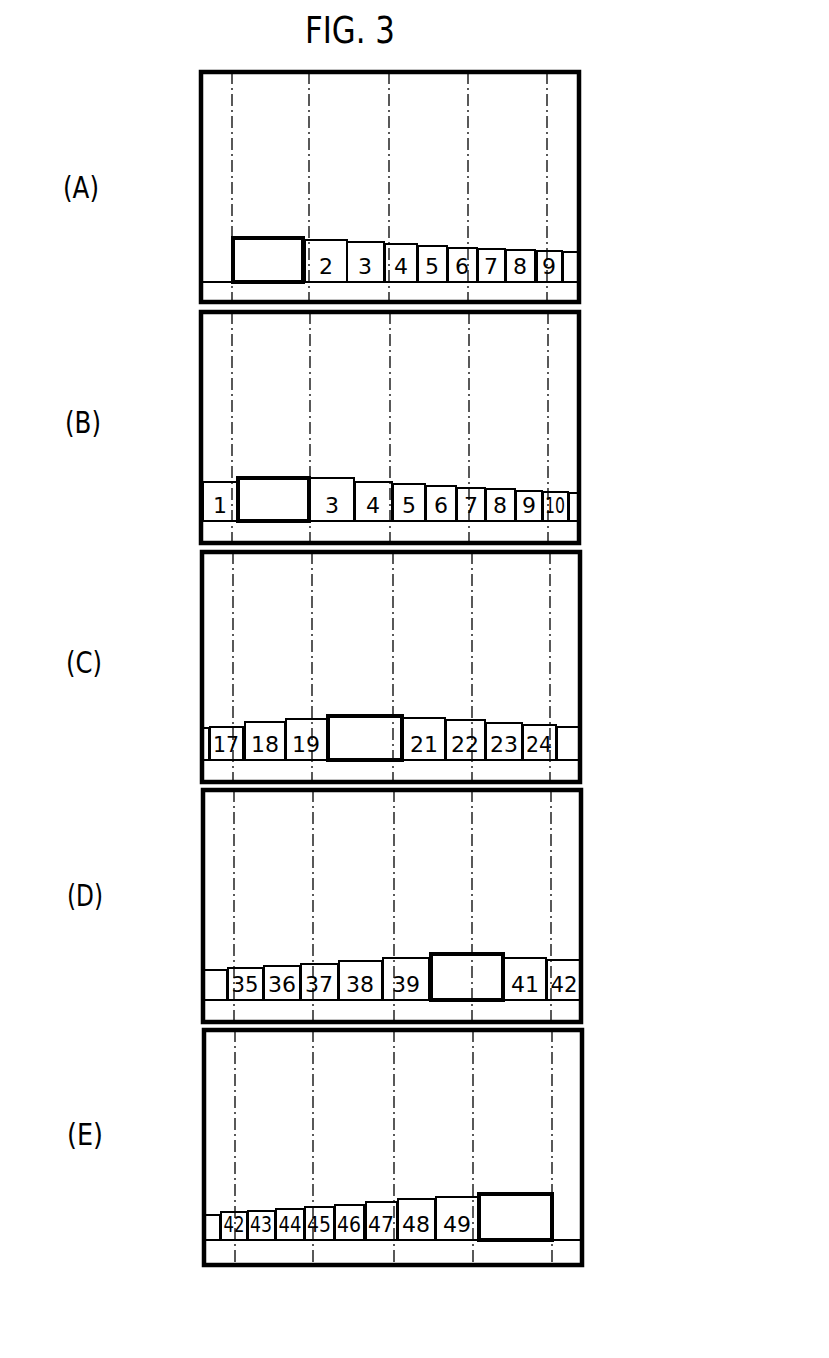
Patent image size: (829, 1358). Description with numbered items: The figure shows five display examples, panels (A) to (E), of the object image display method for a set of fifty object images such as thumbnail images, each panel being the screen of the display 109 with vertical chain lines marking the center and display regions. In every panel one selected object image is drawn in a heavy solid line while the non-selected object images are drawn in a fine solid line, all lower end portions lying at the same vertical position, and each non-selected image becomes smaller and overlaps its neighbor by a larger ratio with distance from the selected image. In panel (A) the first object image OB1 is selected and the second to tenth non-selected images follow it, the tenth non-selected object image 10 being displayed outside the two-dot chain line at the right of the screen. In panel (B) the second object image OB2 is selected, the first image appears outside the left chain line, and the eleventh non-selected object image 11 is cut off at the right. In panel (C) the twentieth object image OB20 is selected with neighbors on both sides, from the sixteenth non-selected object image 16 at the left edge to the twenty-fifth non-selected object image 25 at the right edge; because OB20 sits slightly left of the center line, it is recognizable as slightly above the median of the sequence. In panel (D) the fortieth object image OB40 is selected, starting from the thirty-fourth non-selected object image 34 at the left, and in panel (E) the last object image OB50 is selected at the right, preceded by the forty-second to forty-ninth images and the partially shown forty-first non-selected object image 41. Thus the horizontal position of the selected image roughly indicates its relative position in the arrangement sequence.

The display 109 is at (580, 136).
The first object image OB1 is at (268, 238).
The second object image OB2 is at (268, 478).
The twentieth object image OB20 is at (339, 716).
The fortieth object image OB40 is at (479, 954).
The last object image OB50 is at (518, 1164).
The tenth non-selected object image 10 is at (571, 251).
The eleventh non-selected object image 11 is at (571, 491).
The sixteenth non-selected object image 16 is at (208, 728).
The twenty-fifth non-selected object image 25 is at (566, 727).
The thirty-fourth non-selected object image 34 is at (217, 977).
The forty-first non-selected object image 41 is at (215, 1220).